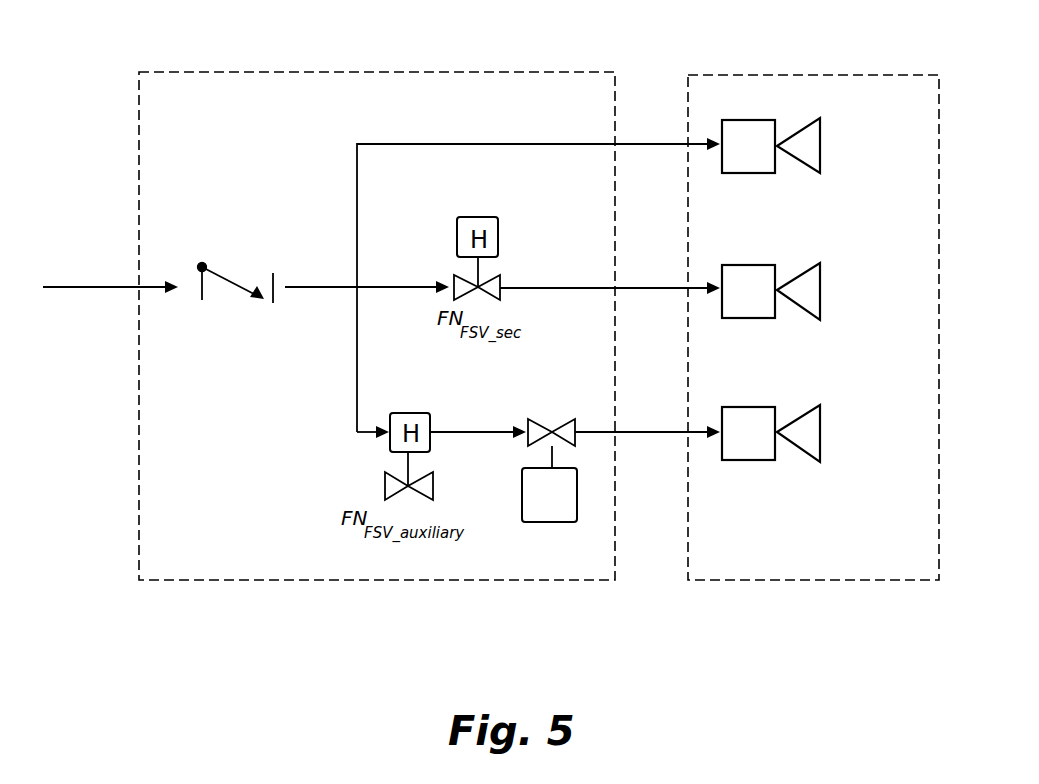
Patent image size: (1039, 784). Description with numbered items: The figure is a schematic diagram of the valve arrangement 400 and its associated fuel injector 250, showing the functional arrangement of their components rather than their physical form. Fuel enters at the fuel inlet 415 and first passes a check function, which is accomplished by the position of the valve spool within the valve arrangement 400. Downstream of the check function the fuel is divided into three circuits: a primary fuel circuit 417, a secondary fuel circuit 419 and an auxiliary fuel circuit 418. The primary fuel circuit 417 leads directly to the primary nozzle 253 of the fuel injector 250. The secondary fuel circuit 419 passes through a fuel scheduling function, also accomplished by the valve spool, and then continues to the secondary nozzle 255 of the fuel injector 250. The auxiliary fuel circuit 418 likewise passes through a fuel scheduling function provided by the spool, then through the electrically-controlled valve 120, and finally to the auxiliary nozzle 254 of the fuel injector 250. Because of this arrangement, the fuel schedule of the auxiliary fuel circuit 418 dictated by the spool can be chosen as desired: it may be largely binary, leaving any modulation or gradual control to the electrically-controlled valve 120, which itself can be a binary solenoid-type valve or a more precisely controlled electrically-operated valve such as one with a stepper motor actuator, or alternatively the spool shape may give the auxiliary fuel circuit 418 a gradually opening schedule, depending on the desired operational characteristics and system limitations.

The valve arrangement 400 is at (223, 66).
The fuel injector 250 is at (727, 69).
The fuel inlet 415 is at (77, 289).
The primary fuel circuit 417 is at (642, 143).
The secondary fuel circuit 419 is at (645, 287).
The auxiliary fuel circuit 418 is at (649, 431).
The primary nozzle 253 is at (823, 144).
The secondary nozzle 255 is at (823, 290).
The auxiliary nozzle 254 is at (823, 432).
The electrically-controlled valve 120 is at (552, 522).